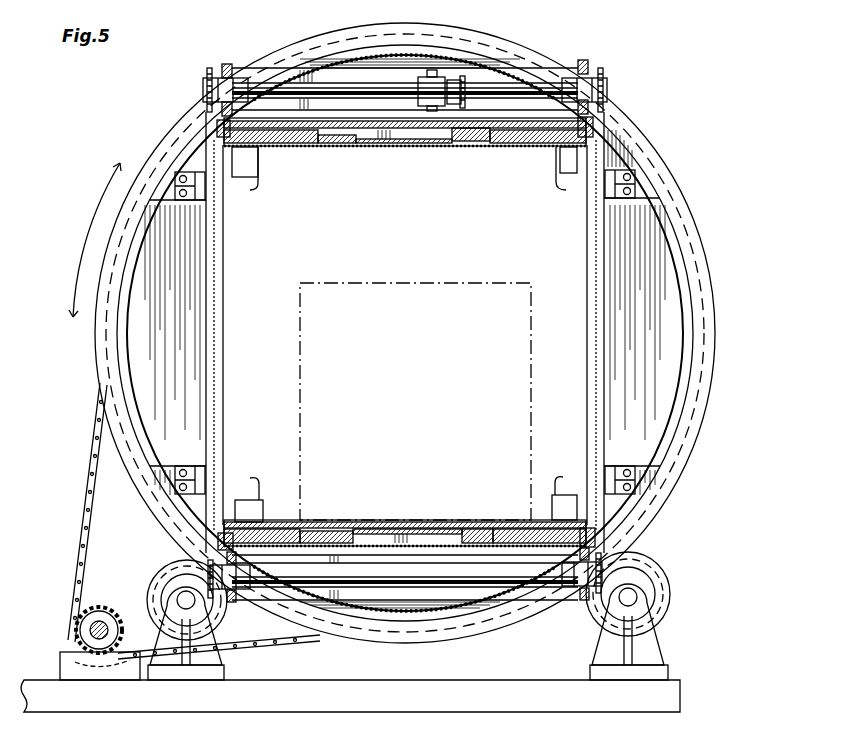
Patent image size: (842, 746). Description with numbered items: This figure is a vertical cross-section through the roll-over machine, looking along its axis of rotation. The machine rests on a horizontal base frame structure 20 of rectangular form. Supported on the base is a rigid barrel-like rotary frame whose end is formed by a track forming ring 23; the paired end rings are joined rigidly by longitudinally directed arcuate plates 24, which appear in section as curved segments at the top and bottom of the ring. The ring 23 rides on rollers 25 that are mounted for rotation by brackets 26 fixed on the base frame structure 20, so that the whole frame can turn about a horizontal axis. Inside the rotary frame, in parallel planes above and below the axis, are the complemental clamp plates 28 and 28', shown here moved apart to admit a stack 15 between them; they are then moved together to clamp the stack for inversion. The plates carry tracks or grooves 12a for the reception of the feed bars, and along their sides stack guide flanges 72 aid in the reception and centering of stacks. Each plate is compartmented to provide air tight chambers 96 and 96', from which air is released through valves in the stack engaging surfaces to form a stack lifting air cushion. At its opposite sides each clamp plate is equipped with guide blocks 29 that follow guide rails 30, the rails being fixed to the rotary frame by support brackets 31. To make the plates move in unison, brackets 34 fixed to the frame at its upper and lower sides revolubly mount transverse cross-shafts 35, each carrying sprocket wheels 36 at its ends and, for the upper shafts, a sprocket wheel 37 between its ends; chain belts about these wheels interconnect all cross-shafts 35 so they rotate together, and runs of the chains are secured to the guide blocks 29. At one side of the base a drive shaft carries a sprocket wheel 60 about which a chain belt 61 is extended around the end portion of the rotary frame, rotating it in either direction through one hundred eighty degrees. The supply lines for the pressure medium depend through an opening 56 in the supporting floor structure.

The track 12a is at (337, 146).
The stack 15 is at (452, 280).
The base frame structure 20 is at (230, 702).
The track forming ring 23 is at (708, 295).
The arcuate plate 24 is at (312, 52).
The roller 25 is at (155, 580).
The bracket 26 is at (172, 650).
The clamp plate 28 is at (405, 510).
The clamp plate 28' is at (405, 153).
The guide block 29 is at (217, 128).
The guide rail 30 is at (206, 283).
The support bracket 31 is at (205, 186).
The bracket 34 is at (228, 64).
The cross-shaft 35 is at (522, 86).
The sprocket wheel 36 is at (205, 78).
The sprocket wheel 37 is at (468, 80).
The opening 56 is at (85, 618).
The sprocket wheel 60 is at (98, 605).
The chain belt 61 is at (90, 500).
The stack guide flange 72 is at (262, 182).
The air tight chamber 96 is at (326, 510).
The air tight chamber 96' is at (481, 152).